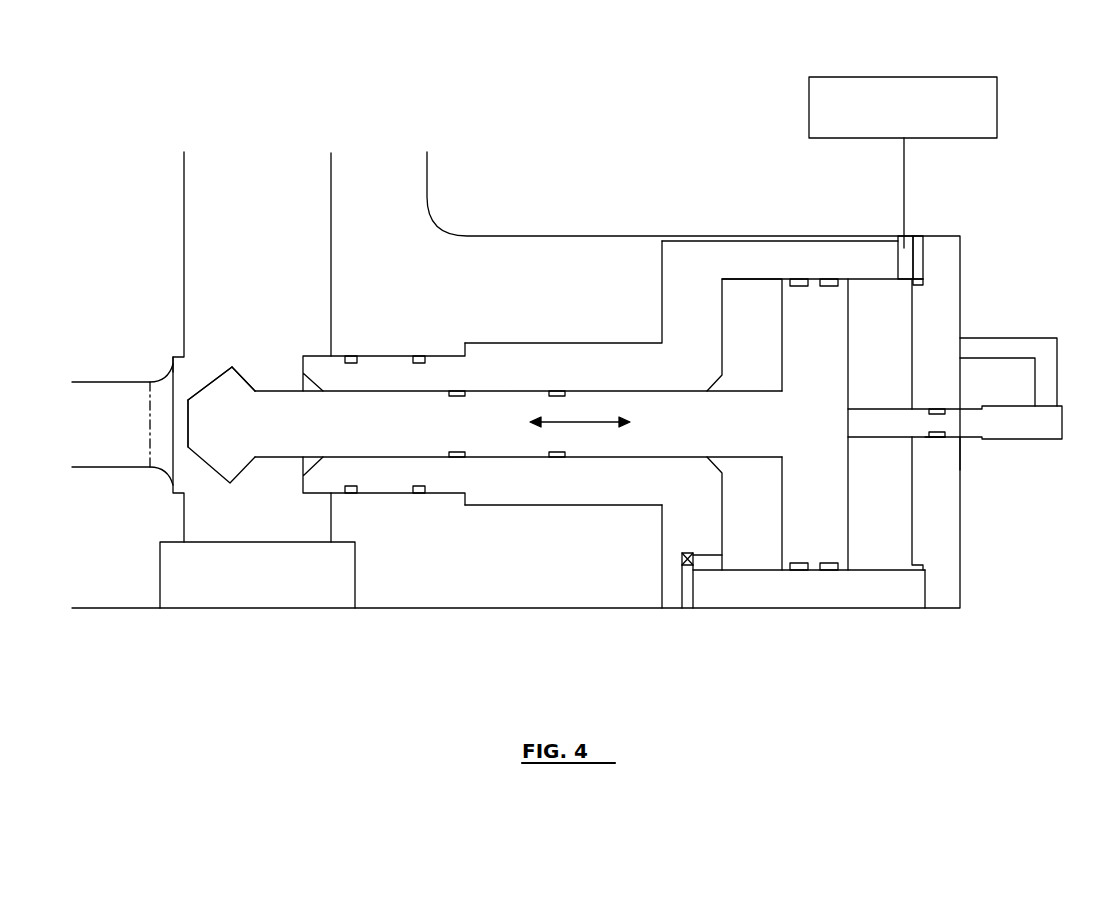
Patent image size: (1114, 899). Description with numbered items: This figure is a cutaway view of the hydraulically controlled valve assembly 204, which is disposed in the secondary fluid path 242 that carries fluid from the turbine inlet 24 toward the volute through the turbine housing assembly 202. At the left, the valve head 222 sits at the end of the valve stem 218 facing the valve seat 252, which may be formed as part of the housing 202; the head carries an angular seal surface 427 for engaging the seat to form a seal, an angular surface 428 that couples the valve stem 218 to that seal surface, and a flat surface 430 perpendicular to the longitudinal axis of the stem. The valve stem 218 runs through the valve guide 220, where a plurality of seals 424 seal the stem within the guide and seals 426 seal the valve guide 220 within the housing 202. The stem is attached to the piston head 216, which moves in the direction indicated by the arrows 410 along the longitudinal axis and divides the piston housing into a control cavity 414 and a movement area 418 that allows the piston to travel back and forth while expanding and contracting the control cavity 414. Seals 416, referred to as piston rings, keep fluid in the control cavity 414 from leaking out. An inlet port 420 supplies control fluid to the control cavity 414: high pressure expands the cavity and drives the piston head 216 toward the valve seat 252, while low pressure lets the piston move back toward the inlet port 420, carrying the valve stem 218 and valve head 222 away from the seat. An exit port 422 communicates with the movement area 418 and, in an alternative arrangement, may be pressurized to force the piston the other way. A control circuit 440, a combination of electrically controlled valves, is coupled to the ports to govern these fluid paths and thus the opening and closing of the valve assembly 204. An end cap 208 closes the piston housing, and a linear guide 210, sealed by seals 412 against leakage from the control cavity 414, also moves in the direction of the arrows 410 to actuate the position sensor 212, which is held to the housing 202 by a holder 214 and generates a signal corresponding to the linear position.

The turbine inlet 24 is at (264, 152).
The turbine housing assembly 202 is at (156, 240).
The secondary fluid path 242 is at (274, 240).
The valve seat 252 is at (173, 363).
The valve head 222 is at (232, 367).
The angular surface 428 is at (248, 381).
The angular seal surface 427 is at (209, 384).
The flat surface 430 is at (188, 437).
The valve guide 220 is at (465, 343).
The seals 426 is at (419, 356).
The valve stem 218 is at (506, 410).
The seals 424 is at (456, 458).
The arrows 410 is at (598, 397).
The movement area 418 is at (737, 302).
The piston head 216 is at (813, 325).
The seals 416 is at (829, 279).
The control cavity 414 is at (878, 298).
The inlet port 420 is at (908, 243).
The control circuit 440 is at (888, 76).
The hydraulically controlled valve assembly 204 is at (697, 180).
The end cap 208 is at (938, 263).
The position sensor 212 is at (1045, 431).
The holder 214 is at (997, 337).
The linear guide 210 is at (972, 438).
The seals 412 is at (933, 440).
The exit port 422 is at (687, 600).